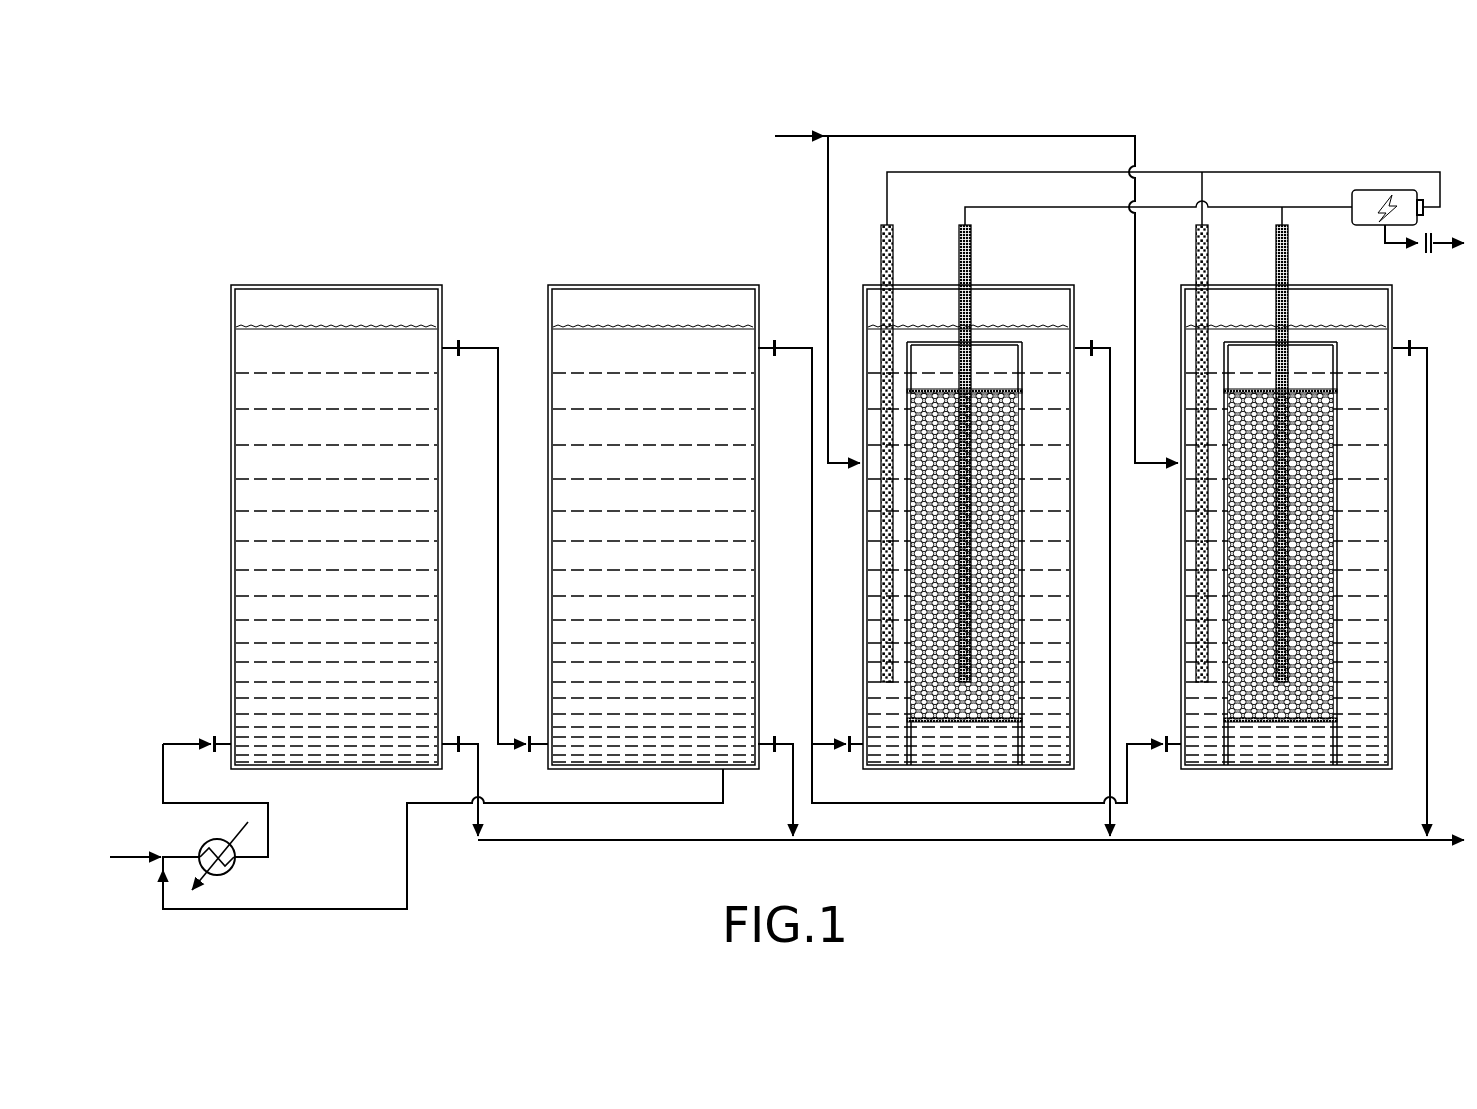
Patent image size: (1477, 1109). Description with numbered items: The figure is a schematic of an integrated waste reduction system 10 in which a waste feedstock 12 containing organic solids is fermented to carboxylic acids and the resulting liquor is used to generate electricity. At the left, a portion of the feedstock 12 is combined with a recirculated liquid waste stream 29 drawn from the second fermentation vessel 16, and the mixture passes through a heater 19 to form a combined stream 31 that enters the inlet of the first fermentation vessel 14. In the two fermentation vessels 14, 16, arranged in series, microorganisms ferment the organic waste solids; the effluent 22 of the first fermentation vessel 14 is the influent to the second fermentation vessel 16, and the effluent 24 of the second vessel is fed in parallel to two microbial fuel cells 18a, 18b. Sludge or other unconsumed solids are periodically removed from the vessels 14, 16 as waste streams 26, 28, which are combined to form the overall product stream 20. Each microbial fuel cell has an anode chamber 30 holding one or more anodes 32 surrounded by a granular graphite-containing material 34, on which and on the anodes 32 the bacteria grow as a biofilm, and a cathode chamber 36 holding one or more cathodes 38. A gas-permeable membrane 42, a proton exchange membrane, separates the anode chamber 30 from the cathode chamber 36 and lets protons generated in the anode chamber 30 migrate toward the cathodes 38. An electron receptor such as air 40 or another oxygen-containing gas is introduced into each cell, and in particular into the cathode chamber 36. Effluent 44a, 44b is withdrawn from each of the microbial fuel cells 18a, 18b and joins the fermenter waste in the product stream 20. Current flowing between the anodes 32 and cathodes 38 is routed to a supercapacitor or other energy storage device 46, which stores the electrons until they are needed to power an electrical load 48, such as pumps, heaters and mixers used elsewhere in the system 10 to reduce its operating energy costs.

The integrated waste reduction system 10 is at (388, 148).
The waste feedstock 12 is at (127, 856).
The first fermentation vessel 14 is at (287, 285).
The second fermentation vessel 16 is at (603, 285).
The microbial fuel cell 18a is at (1144, 533).
The microbial fuel cell 18b is at (1287, 770).
The heater 19 is at (205, 846).
The product stream 20 is at (1441, 843).
The effluent 22 is at (477, 347).
The effluent 24 is at (793, 347).
The waste stream 26 is at (478, 776).
The waste stream 28 is at (793, 776).
The recirculated liquid waste stream 29 is at (407, 842).
The anode chamber 30 is at (1009, 641).
The combined stream 31 is at (181, 743).
The anode 32 is at (971, 260).
The granular graphite-containing material 34 is at (1003, 455).
The cathode chamber 36 is at (1055, 552).
The cathode 38 is at (893, 260).
The air 40 is at (797, 135).
The gas-permeable membrane 42 is at (1022, 485).
The effluent 44a is at (1110, 778).
The effluent 44b is at (1427, 780).
The energy storage device 46 is at (1370, 192).
The electrical load 48 is at (1430, 252).